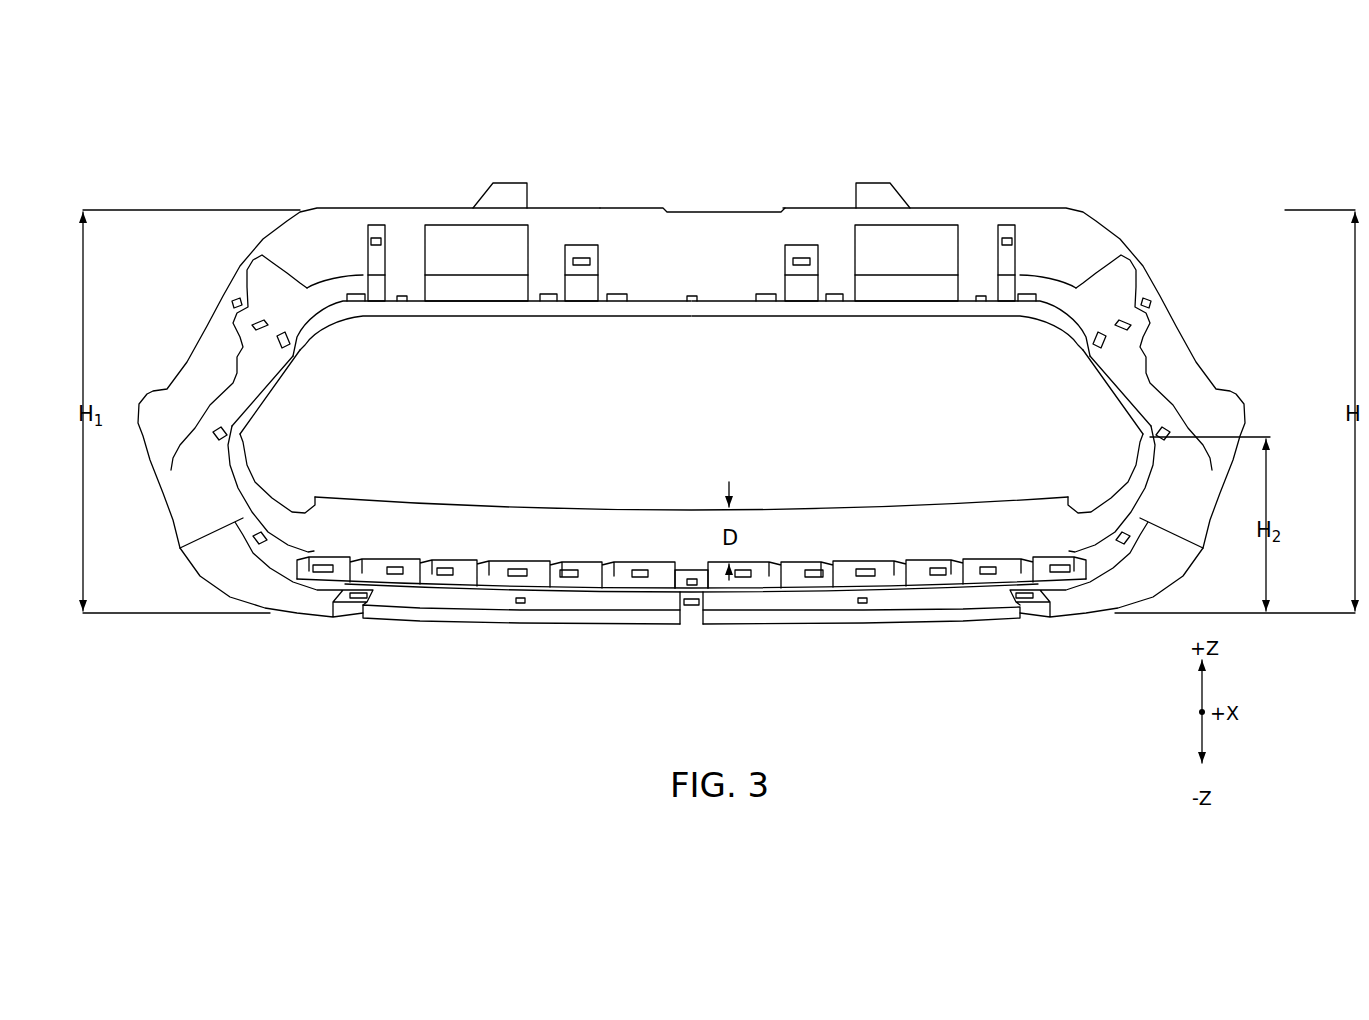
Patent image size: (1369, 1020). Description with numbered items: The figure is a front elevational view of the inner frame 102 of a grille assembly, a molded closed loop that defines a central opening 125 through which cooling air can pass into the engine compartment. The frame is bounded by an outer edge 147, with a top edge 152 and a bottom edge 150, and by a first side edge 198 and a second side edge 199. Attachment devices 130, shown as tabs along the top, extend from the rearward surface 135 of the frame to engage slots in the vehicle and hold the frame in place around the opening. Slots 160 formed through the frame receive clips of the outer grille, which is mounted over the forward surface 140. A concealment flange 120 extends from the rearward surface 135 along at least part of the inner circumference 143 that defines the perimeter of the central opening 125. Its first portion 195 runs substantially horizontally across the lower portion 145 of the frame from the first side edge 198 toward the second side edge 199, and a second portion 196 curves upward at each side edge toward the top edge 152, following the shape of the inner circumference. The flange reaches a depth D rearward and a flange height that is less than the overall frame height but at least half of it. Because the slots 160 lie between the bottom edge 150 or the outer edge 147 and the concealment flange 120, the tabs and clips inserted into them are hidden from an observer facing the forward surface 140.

The inner frame 102 is at (736, 405).
The outer edge 147 is at (1123, 236).
The top edge 152 is at (407, 215).
The attachment devices 130 is at (512, 190).
The inner circumference 143 is at (1232, 489).
The slots 160 is at (582, 258).
The central opening 125 is at (883, 436).
The first side edge 198 is at (270, 398).
The second side edge 199 is at (1116, 397).
The second portion 196 is at (254, 448).
The rearward surface 135 is at (821, 504).
The concealment flange 120 is at (512, 518).
The first portion 195 is at (689, 542).
The forward surface 140 is at (713, 300).
The bottom edge 150 is at (830, 625).
The lower portion 145 is at (1138, 630).